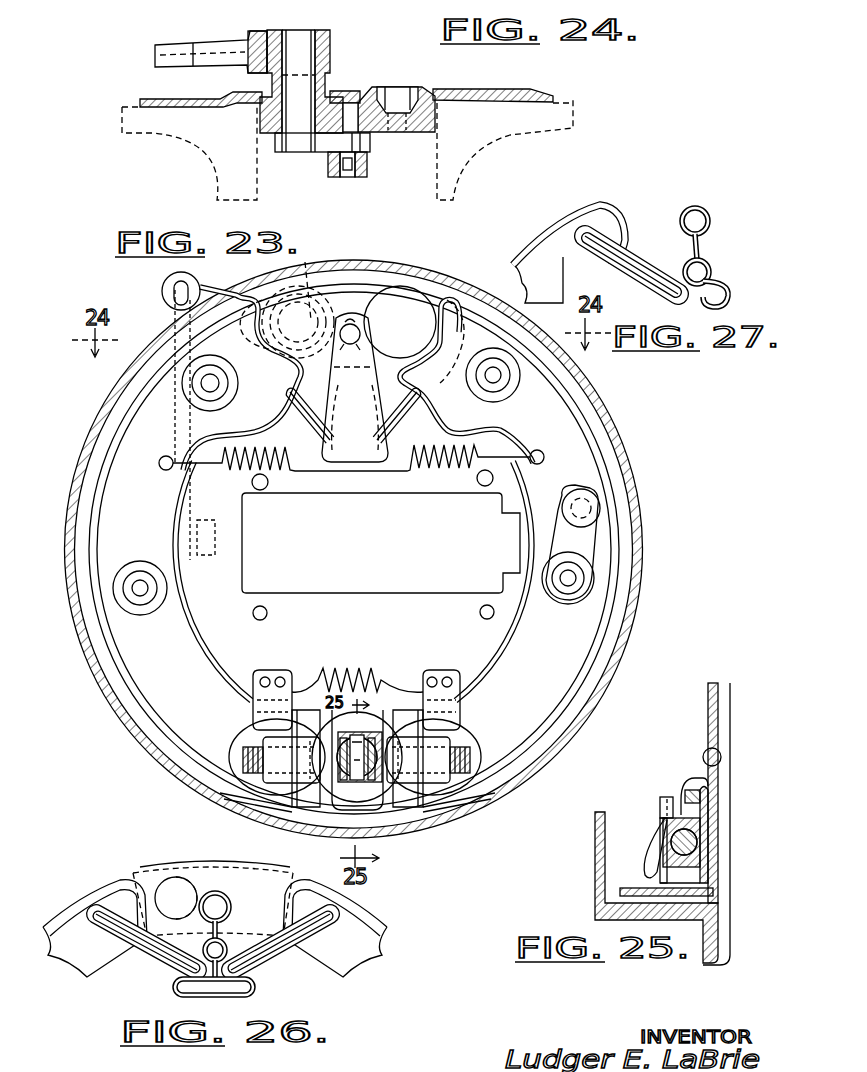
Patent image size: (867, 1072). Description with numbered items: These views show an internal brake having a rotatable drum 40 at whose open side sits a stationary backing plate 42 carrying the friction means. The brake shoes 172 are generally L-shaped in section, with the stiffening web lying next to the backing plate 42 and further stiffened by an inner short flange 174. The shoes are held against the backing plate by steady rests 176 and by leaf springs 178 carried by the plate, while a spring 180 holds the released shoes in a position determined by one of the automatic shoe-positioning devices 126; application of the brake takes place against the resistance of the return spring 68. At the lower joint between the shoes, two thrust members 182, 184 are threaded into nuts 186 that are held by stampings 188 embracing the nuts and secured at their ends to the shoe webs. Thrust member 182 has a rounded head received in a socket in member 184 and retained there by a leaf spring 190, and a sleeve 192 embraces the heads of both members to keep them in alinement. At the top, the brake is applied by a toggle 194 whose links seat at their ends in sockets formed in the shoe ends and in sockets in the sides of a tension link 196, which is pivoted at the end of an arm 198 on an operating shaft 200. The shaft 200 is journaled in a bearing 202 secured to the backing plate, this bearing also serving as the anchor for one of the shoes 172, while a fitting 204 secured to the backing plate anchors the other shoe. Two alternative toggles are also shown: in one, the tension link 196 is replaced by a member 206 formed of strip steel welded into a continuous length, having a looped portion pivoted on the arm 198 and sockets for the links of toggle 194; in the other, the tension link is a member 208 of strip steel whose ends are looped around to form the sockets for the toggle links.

In FIG. 23, the rotatable drum 40 is at (637, 627).
In FIG. 25, the rotatable drum 40 is at (594, 848).
In FIG. 23, the backing plate 42 is at (196, 623).
In FIG. 24, the backing plate 42 is at (532, 92).
In FIG. 25, the backing plate 42 is at (708, 718).
In FIG. 23, the return spring 68 is at (470, 494).
In FIG. 23, the automatic shoe-positioning device 126 is at (560, 540).
In FIG. 23, the brake shoes 172 is at (365, 482).
In FIG. 24, the brake shoes 172 is at (200, 143).
In FIG. 27, the brake shoes 172 is at (585, 210).
In FIG. 25, the brake shoes 172 is at (620, 892).
In FIG. 26, the brake shoes 172 is at (208, 931).
In FIG. 23, the inner short flange 174 is at (214, 660).
In FIG. 25, the inner short flange 174 is at (702, 786).
In FIG. 23, the steady rests 176 is at (222, 388).
In FIG. 23, the leaf springs 178 is at (270, 690).
In FIG. 25, the leaf springs 178 is at (687, 782).
In FIG. 23, the spring 180 is at (353, 665).
In FIG. 23, the thrust member 182 is at (336, 760).
In FIG. 23, the thrust member 184 is at (392, 772).
In FIG. 23, the nuts 186 is at (292, 768).
In FIG. 25, the nuts 186 is at (705, 855).
In FIG. 23, the stampings 188 is at (258, 728).
In FIG. 25, the stampings 188 is at (663, 862).
In FIG. 23, the leaf spring 190 is at (344, 782).
In FIG. 25, the leaf spring 190 is at (657, 843).
In FIG. 23, the sleeve 192 is at (371, 782).
In FIG. 23, the toggle 194 is at (312, 442).
In FIG. 27, the toggle 194 is at (638, 265).
In FIG. 26, the toggle 194 is at (167, 953).
In FIG. 23, the tension link 196 is at (352, 465).
In FIG. 24, the tension link 196 is at (367, 161).
In FIG. 23, the arm 198 is at (352, 323).
In FIG. 24, the arm 198 is at (320, 138).
In FIG. 26, the arm 198 is at (176, 890).
In FIG. 23, the operating shaft 200 is at (300, 292).
In FIG. 24, the operating shaft 200 is at (295, 106).
In FIG. 24, the bearing 202 is at (268, 118).
In FIG. 24, the fitting 204 is at (420, 86).
In FIG. 26, the member 206 is at (236, 995).
In FIG. 27, the member 208 is at (712, 272).